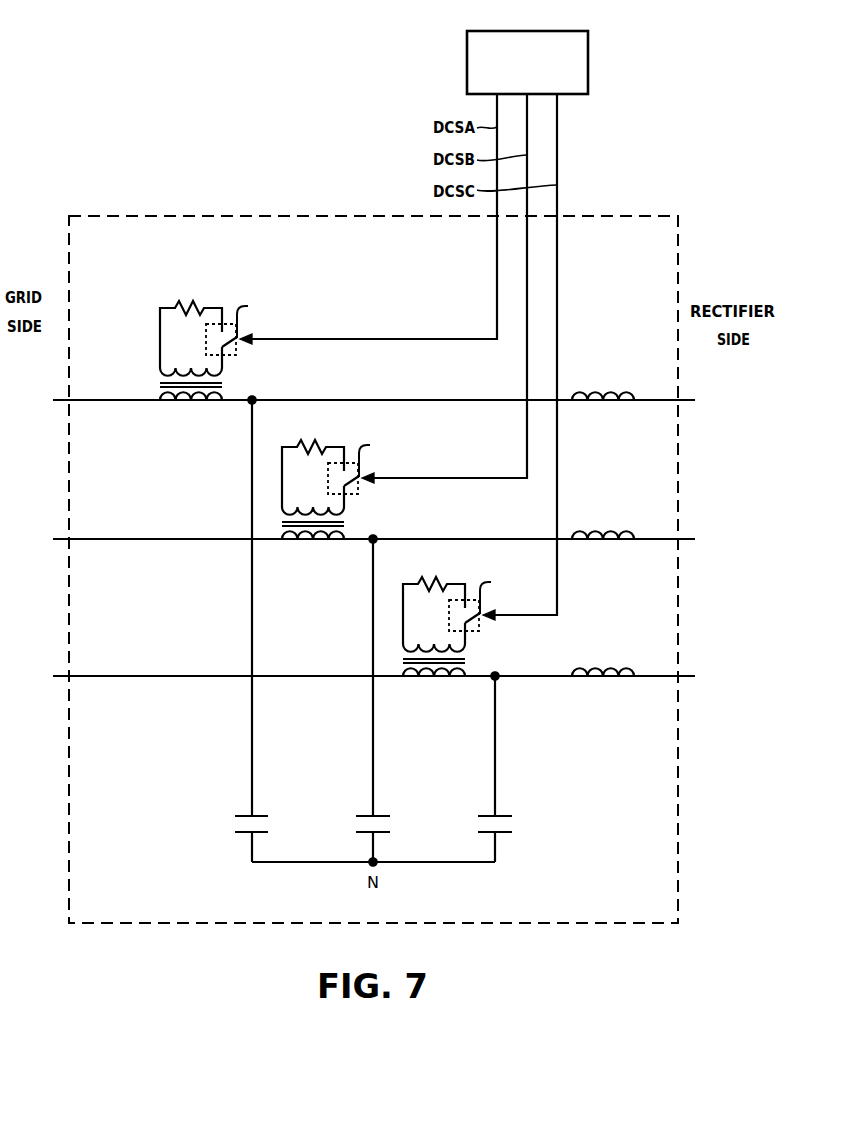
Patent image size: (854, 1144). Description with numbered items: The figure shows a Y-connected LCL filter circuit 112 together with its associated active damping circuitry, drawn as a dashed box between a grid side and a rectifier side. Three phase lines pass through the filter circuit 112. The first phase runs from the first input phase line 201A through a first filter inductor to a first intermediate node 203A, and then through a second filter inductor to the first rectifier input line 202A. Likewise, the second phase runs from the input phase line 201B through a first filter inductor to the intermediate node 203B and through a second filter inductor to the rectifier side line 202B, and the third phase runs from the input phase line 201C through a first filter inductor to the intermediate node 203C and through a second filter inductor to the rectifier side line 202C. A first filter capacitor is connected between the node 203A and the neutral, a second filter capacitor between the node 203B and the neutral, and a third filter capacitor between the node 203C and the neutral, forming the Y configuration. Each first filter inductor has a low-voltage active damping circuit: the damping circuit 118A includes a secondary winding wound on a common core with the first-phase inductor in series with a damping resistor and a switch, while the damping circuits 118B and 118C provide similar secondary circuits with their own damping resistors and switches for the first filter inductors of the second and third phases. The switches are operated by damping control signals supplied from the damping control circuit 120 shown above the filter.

The damping control circuit 120 is at (527, 31).
The LCL filter circuit 112 is at (378, 216).
The first active damping circuit 118A is at (243, 288).
The second active damping circuit 118B is at (365, 427).
The third active damping circuit 118C is at (486, 571).
The first input phase line 201A is at (130, 400).
The second input phase line 201B is at (130, 539).
The third input phase line 201C is at (130, 676).
The first rectifier input line 202A is at (664, 400).
The second rectifier input line 202B is at (664, 539).
The third rectifier input line 202C is at (664, 676).
The first intermediate node 203A is at (251, 723).
The second intermediate node 203B is at (373, 723).
The third intermediate node 203C is at (495, 723).